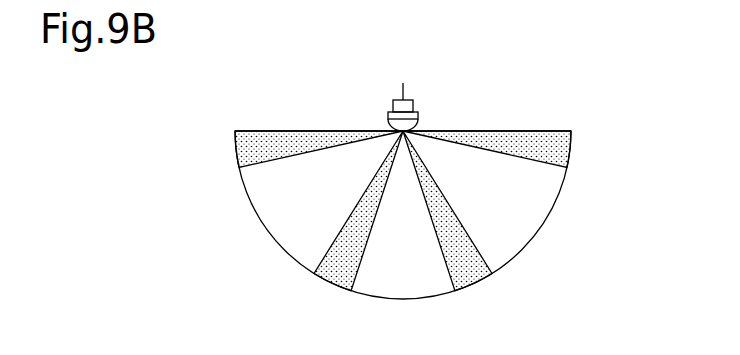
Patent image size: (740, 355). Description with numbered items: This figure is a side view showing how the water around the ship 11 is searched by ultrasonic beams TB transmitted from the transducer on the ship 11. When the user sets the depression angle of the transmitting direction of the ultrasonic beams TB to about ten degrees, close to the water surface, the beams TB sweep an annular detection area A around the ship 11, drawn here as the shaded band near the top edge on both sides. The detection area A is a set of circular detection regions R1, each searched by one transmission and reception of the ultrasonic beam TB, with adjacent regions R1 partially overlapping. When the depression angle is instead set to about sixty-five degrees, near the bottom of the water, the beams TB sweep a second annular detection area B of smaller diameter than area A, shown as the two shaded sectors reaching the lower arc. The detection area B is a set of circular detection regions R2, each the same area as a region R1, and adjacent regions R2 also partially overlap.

The ship 11 is at (415, 106).
The detection region R1 is at (232, 137).
The detection region R2 is at (319, 280).
The detection area A is at (224, 155).
The detection area B is at (331, 299).
The ultrasonic beam TB is at (302, 158).